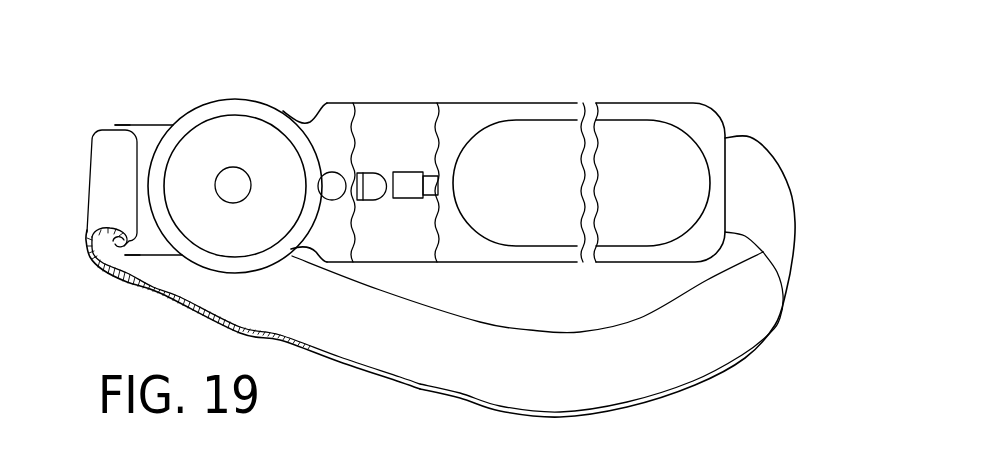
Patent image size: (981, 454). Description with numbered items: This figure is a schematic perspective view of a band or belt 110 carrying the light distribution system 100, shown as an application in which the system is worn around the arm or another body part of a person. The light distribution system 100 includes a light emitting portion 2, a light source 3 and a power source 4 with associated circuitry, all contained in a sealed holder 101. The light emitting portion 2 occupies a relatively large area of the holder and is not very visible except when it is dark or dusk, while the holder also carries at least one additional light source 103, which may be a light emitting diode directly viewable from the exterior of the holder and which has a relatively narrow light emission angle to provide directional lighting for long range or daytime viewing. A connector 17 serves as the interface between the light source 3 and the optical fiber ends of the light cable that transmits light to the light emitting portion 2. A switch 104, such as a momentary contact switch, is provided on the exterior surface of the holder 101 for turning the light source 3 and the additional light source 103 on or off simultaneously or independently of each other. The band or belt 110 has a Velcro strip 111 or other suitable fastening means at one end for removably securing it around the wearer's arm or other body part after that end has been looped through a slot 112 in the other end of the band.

The light distribution system 100 is at (587, 103).
The sealed holder 101 is at (417, 104).
The light emitting portion 2 is at (545, 147).
The additional light source 103 is at (333, 163).
The connector 17 is at (410, 178).
The light source 3 is at (381, 200).
The switch 104 is at (233, 190).
The slot 112 is at (118, 127).
The power source 4 is at (148, 182).
The band or belt 110 is at (760, 167).
The Velcro strip 111 is at (163, 300).